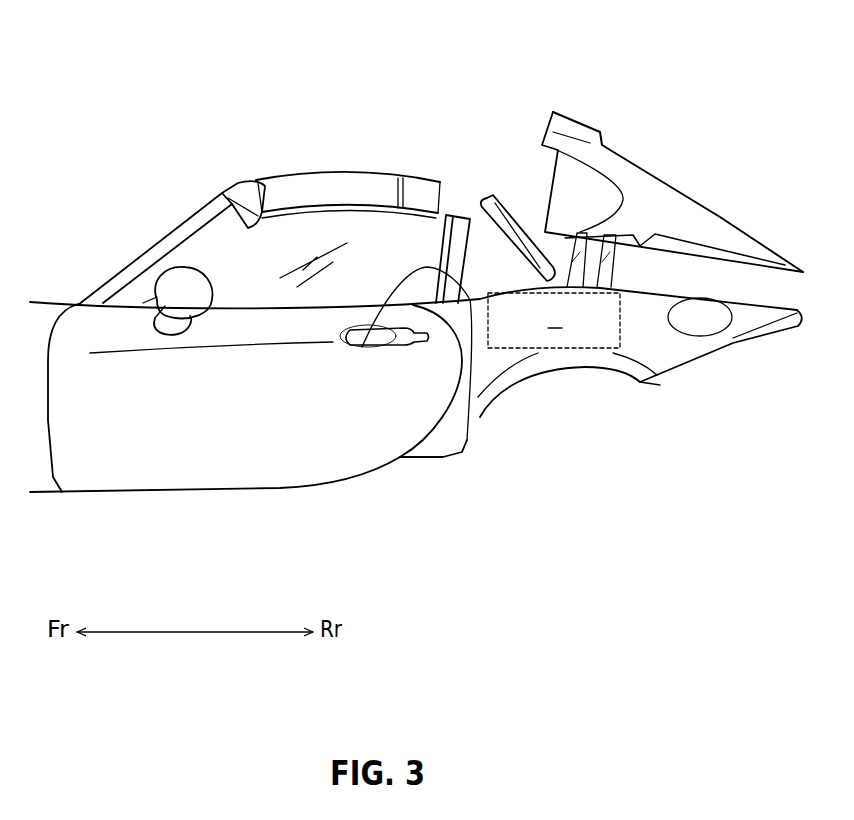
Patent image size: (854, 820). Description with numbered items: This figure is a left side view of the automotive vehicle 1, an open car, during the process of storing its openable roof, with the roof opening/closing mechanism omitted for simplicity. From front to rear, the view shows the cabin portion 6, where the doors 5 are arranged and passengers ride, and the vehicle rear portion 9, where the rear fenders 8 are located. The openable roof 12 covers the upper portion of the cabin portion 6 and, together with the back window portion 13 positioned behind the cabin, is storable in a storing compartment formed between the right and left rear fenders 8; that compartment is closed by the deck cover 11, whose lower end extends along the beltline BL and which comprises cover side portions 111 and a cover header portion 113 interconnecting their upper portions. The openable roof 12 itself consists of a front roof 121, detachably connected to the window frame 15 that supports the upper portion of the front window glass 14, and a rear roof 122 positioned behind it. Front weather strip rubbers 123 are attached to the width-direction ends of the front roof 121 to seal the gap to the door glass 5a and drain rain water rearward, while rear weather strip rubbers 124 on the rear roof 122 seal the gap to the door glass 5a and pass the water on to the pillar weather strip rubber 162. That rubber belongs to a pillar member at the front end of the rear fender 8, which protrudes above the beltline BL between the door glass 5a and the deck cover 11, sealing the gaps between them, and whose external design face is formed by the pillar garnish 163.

The automotive vehicle 1 is at (125, 88).
The door 5 is at (108, 450).
The door glass 5a is at (255, 240).
The cabin portion 6 is at (243, 523).
The rear fender 8 is at (440, 427).
The vehicle rear portion 9 is at (781, 349).
The deck cover 11 is at (672, 153).
The openable roof 12 is at (348, 140).
The back window portion 13 is at (510, 197).
The front window glass 14 is at (140, 258).
The window frame 15 is at (232, 177).
The cover side portion 111 is at (656, 200).
The cover header portion 113 is at (578, 122).
The front roof 121 is at (330, 175).
The rear roof 122 is at (427, 178).
The front weather strip rubber 123 is at (290, 177).
The rear weather strip rubber 124 is at (433, 300).
The pillar weather strip rubber 162 is at (362, 347).
The pillar garnish 163 is at (480, 417).
The beltline BL is at (633, 298).